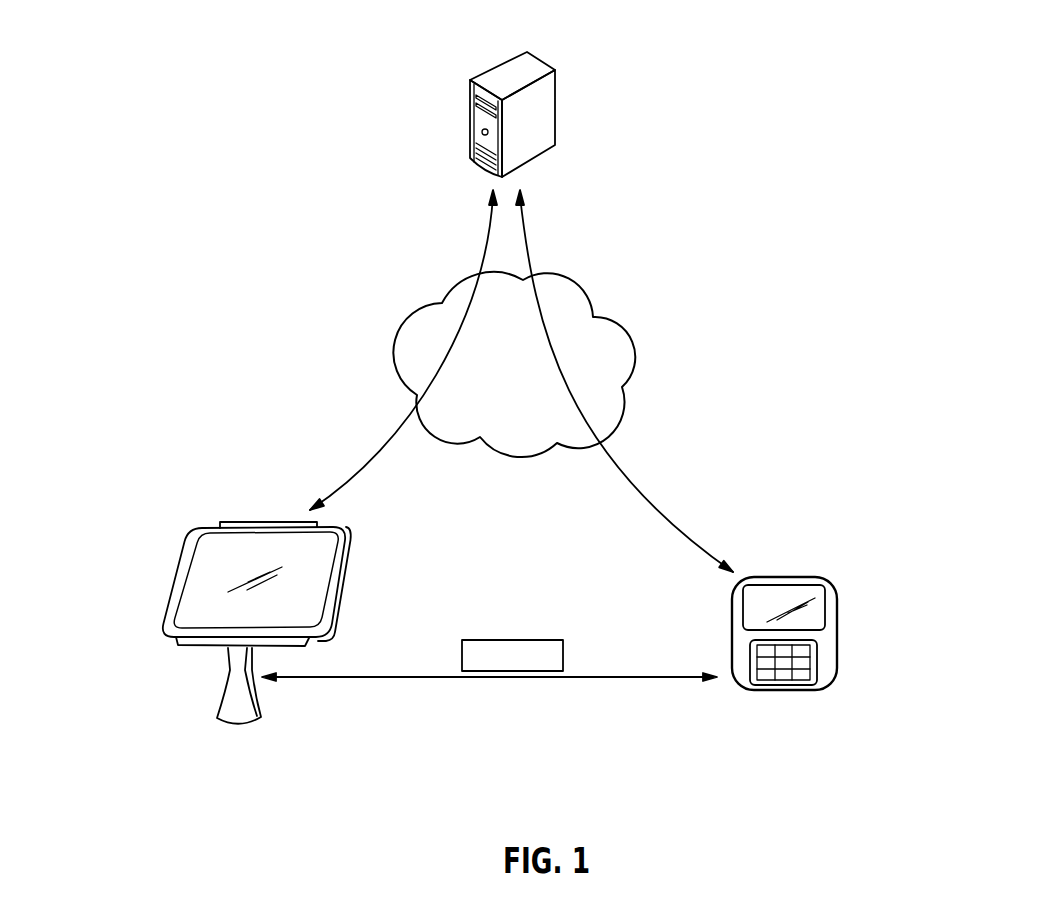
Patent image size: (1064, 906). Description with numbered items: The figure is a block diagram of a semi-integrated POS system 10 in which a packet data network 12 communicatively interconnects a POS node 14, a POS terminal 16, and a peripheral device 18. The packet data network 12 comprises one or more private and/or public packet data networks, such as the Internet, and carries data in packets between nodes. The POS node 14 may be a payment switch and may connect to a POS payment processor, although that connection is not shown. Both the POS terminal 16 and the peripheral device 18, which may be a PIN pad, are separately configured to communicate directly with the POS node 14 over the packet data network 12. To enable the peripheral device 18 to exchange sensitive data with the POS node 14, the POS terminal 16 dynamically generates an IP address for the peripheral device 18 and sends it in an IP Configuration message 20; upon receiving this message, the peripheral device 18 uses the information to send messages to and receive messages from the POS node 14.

The semi-integrated POS system 10 is at (917, 127).
The packet data network 12 is at (522, 380).
The POS node 14 is at (556, 103).
The POS terminal 16 is at (187, 540).
The peripheral device 18 is at (817, 577).
The IP Configuration message 20 is at (492, 640).